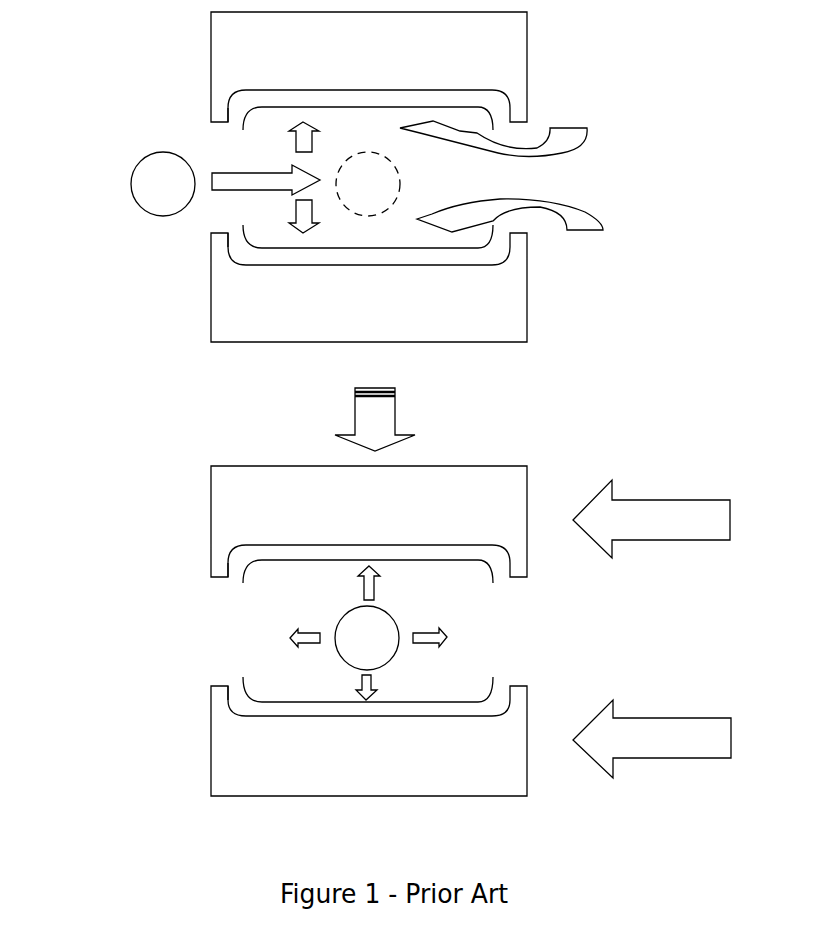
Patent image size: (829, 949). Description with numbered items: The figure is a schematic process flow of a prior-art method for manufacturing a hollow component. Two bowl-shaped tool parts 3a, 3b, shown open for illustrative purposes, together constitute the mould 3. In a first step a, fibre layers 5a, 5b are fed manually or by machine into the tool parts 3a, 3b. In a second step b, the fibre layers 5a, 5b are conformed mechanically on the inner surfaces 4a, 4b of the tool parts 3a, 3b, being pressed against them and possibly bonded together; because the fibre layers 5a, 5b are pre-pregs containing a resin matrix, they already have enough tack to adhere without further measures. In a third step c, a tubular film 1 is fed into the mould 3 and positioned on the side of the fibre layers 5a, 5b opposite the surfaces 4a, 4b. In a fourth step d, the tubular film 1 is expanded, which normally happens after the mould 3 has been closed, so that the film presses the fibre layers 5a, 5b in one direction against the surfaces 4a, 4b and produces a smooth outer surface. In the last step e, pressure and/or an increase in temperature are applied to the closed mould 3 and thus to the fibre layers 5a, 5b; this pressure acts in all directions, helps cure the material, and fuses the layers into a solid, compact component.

The tubular film 1 is at (133, 196).
The mould 3 is at (645, 140).
The tool part 3a is at (210, 35).
The tool part 3b is at (210, 285).
The inner surface 4a is at (236, 127).
The inner surface 4b is at (236, 228).
The fibre layer 5a is at (395, 108).
The fibre layer 5b is at (420, 247).
The first step a is at (538, 153).
The second step b is at (305, 148).
The third step c is at (265, 173).
The fourth step d is at (373, 598).
The last method step e is at (668, 548).